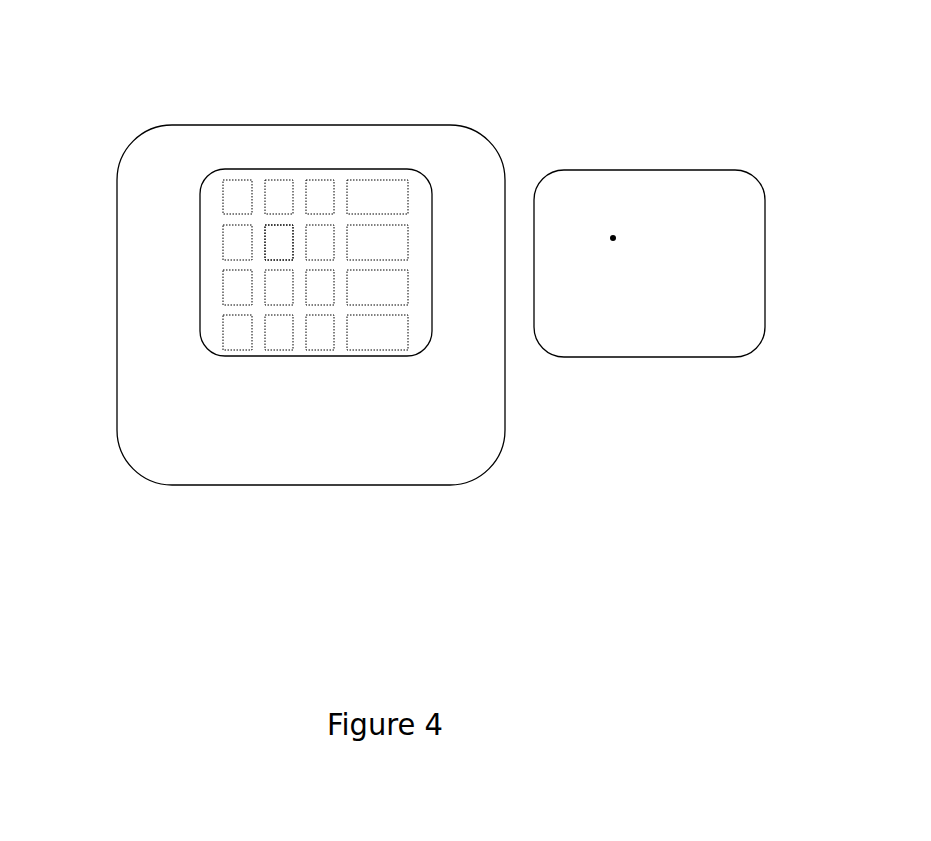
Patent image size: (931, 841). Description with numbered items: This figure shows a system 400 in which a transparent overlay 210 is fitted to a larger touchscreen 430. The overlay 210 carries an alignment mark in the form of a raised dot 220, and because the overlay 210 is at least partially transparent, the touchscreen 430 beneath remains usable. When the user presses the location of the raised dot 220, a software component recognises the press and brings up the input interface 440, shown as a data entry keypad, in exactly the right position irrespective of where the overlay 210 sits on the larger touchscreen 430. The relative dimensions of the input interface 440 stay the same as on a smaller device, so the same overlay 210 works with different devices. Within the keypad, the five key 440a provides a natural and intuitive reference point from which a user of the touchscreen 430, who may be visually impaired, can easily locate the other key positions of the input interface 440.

The system 400 is at (602, 128).
The transparent overlay 210 is at (769, 191).
The raised dot 220 is at (618, 256).
The larger touchscreen 430 is at (368, 471).
The input interface 440 is at (206, 340).
The '5' key 440a is at (294, 254).